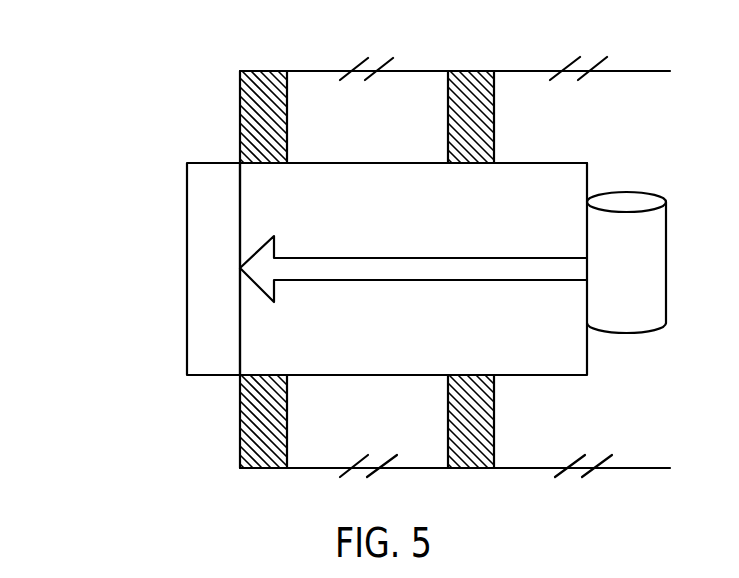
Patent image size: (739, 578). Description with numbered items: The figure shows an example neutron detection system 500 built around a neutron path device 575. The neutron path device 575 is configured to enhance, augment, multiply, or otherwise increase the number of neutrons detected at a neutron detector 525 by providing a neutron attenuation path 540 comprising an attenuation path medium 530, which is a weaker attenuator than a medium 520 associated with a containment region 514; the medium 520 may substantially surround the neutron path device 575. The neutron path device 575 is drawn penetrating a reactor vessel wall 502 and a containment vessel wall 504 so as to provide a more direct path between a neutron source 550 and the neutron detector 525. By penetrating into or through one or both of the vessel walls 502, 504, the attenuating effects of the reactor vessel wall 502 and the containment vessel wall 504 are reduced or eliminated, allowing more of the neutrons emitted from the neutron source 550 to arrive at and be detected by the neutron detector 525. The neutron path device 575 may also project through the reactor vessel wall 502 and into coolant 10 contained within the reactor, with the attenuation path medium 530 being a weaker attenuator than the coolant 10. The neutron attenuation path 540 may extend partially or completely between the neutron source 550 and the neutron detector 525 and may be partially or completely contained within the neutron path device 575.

The neutron detection system 500 is at (192, 420).
The reactor vessel wall 502 is at (500, 142).
The containment vessel wall 504 is at (229, 120).
The containment region 514 is at (320, 70).
The medium 520 is at (384, 432).
The neutron detector 525 is at (174, 238).
The attenuation path medium 530 is at (431, 339).
The neutron attenuation path 540 is at (362, 257).
The neutron source 550 is at (640, 192).
The neutron path device 575 is at (343, 163).
The coolant 10 is at (617, 429).